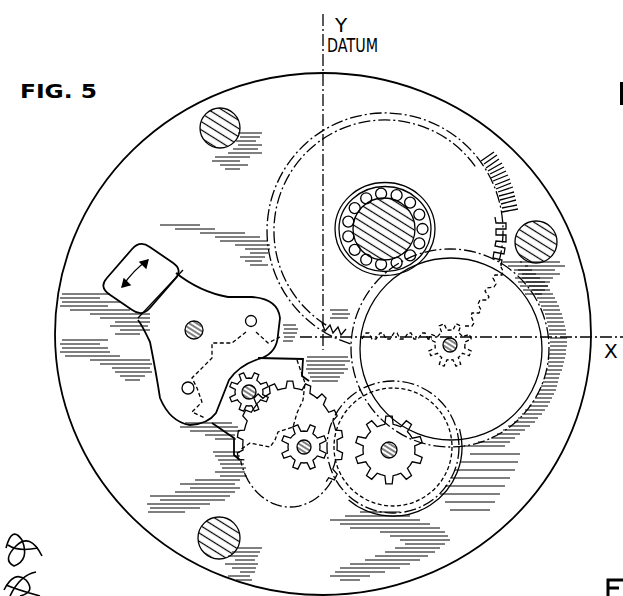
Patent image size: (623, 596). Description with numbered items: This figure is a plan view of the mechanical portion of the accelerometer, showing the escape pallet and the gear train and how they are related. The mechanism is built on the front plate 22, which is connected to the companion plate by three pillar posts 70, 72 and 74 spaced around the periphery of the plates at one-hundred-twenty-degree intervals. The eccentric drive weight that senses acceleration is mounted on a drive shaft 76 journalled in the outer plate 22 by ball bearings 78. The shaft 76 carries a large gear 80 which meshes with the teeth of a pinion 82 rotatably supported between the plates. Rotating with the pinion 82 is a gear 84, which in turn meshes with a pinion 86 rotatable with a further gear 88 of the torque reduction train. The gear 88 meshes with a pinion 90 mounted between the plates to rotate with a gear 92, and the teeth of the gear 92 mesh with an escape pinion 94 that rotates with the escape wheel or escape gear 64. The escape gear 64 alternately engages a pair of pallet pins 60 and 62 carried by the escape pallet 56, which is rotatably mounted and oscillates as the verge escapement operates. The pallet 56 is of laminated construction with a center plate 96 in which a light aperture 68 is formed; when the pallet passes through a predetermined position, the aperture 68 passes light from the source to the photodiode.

The front plate 22 is at (251, 86).
The escape pallet 56 is at (195, 305).
The pallet pin 60 is at (182, 391).
The pallet pin 62 is at (255, 317).
The escape gear 64 is at (210, 418).
The light aperture 68 is at (125, 258).
The pillar post 70 is at (226, 125).
The pillar post 72 is at (546, 238).
The pillar post 74 is at (237, 543).
The drive shaft 76 is at (392, 220).
The ball bearings 78 is at (373, 193).
The large gear 80 is at (293, 200).
The pinion 82 is at (470, 345).
The gear 84 is at (493, 412).
The pinion 86 is at (407, 462).
The gear 88 is at (377, 498).
The pinion 90 is at (302, 468).
The gear 92 is at (267, 477).
The escape pinion 94 is at (248, 372).
The center plate 96 is at (172, 272).